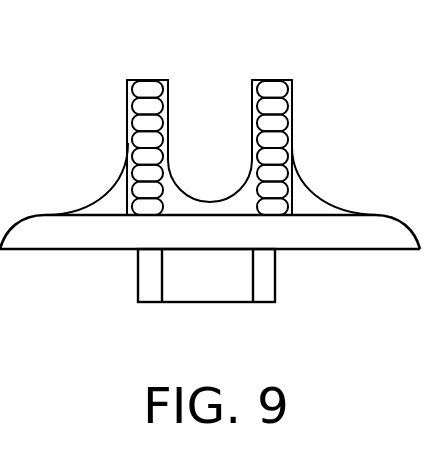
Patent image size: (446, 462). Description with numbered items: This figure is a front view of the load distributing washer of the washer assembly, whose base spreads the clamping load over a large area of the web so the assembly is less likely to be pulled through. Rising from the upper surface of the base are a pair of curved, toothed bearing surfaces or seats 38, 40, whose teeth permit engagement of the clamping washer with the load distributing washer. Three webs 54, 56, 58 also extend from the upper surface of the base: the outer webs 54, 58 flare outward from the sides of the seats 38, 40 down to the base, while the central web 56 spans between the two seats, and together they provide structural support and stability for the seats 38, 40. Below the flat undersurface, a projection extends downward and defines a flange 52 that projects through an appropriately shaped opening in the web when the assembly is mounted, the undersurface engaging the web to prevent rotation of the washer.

The curved toothed bearing surface or seat 38 is at (150, 80).
The curved toothed bearing surface or seat 40 is at (272, 80).
The flange 52 is at (275, 274).
The web 54 is at (105, 198).
The web 56 is at (188, 192).
The web 58 is at (315, 195).